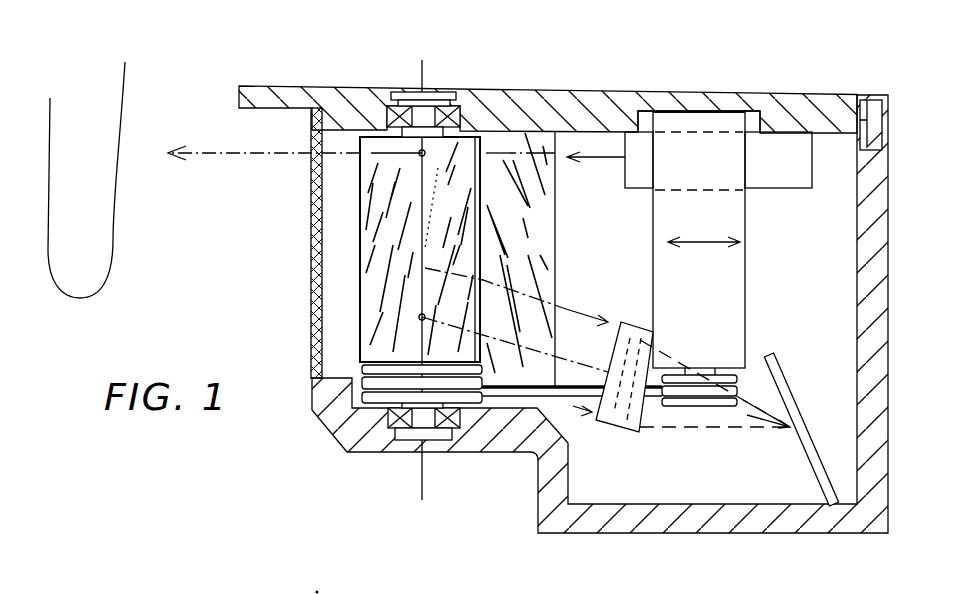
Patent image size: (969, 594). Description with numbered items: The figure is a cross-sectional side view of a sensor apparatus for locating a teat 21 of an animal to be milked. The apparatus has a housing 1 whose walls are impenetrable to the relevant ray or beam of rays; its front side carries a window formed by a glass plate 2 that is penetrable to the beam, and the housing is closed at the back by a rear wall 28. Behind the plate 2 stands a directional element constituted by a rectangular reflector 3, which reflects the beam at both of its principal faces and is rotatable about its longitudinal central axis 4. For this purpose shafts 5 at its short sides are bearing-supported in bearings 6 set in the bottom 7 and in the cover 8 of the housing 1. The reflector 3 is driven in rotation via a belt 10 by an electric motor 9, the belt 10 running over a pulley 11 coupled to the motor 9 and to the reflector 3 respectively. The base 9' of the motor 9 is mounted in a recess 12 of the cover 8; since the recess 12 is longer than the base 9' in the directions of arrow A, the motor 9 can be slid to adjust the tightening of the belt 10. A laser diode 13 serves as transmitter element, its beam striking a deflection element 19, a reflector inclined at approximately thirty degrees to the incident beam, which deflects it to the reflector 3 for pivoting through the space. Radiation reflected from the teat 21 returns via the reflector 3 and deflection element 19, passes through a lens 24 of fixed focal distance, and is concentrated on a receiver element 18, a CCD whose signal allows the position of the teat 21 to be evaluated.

The housing 1 is at (822, 550).
The glass plate 2 is at (311, 258).
The rectangular reflector 3 is at (375, 300).
The longitudinal central axis 4 is at (422, 62).
The shafts 5 is at (407, 90).
The bearings 6 is at (462, 106).
The bottom 7 is at (681, 515).
The cover 8 is at (598, 95).
The electric motor 9 is at (723, 240).
The base of motor 9' is at (704, 83).
The belt 10 is at (584, 387).
The pulley 11 is at (714, 406).
The recess 12 is at (648, 112).
The laser diode 13 is at (810, 178).
The receiver element 18 is at (790, 420).
The deflection element 19 is at (545, 203).
The teat 21 is at (97, 245).
The lens 24 is at (617, 434).
The rear wall 28 is at (858, 332).
The arrow A is at (704, 229).